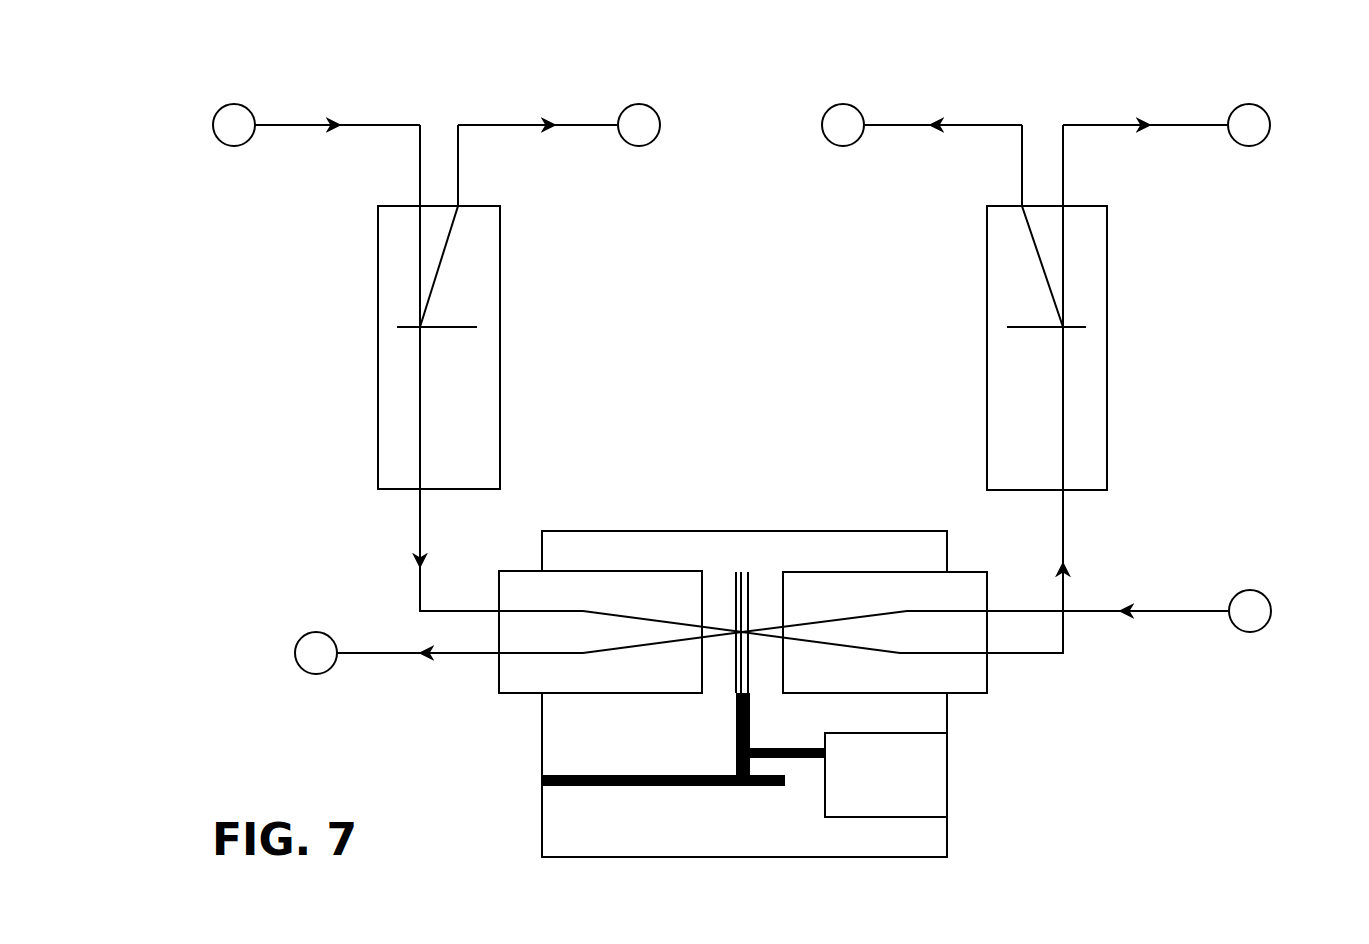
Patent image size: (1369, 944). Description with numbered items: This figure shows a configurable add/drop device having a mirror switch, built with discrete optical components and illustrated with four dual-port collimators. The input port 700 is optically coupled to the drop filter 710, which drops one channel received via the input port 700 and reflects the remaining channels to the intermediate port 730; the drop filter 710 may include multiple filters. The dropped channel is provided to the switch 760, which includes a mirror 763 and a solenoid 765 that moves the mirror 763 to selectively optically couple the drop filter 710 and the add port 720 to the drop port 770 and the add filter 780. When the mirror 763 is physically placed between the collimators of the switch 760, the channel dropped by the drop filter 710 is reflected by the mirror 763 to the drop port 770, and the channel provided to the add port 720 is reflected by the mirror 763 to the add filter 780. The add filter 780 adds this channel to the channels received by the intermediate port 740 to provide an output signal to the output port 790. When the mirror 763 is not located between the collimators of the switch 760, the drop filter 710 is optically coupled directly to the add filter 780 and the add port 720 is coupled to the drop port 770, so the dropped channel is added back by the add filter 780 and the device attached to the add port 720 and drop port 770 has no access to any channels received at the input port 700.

The input port 700 is at (296, 97).
The drop filter 710 is at (378, 330).
The add port 720 is at (1205, 583).
The intermediate port 730 is at (585, 96).
The intermediate port 740 is at (894, 96).
The switch 760 is at (542, 817).
The mirror 763 is at (738, 572).
The solenoid 765 is at (905, 775).
The drop port 770 is at (367, 625).
The add filter 780 is at (1107, 329).
The output port 790 is at (1188, 97).